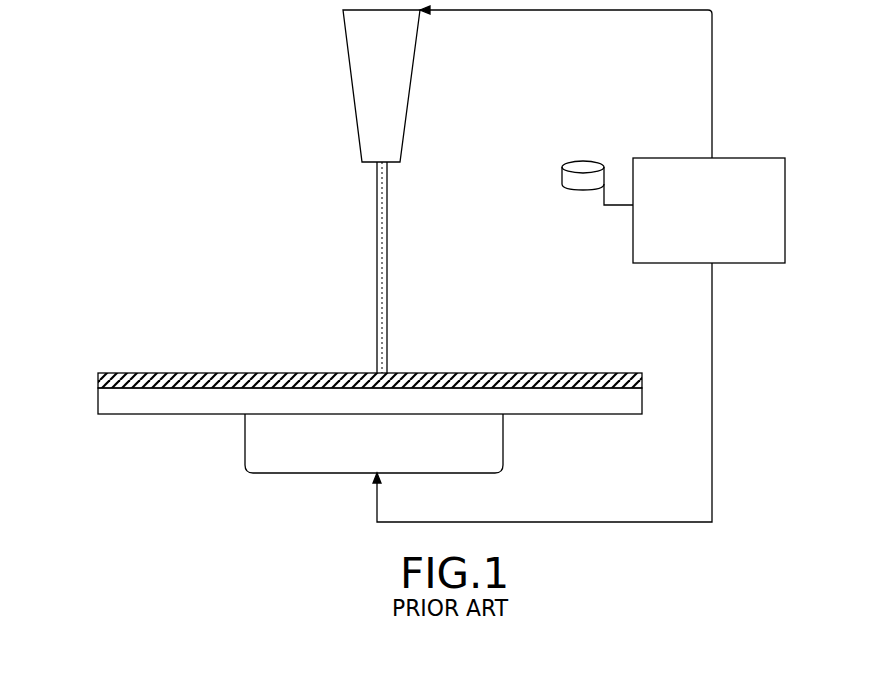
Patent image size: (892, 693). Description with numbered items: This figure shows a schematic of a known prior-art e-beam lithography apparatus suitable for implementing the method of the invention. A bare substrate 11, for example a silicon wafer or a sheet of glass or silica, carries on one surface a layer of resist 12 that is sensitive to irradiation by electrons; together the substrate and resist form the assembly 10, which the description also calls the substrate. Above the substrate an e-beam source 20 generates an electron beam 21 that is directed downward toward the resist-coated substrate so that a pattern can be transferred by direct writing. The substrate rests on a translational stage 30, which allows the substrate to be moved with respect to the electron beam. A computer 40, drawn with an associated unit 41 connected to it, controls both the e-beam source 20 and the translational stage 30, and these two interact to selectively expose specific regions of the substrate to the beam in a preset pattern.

The assembly 10 is at (370, 392).
The substrate 11 is at (97, 401).
The layer of resist 12 is at (96, 377).
The e-beam source 20 is at (350, 62).
The electron beam 21 is at (378, 272).
The translational stage 30 is at (318, 478).
The computer 40 is at (750, 157).
The memory 41 is at (581, 158).